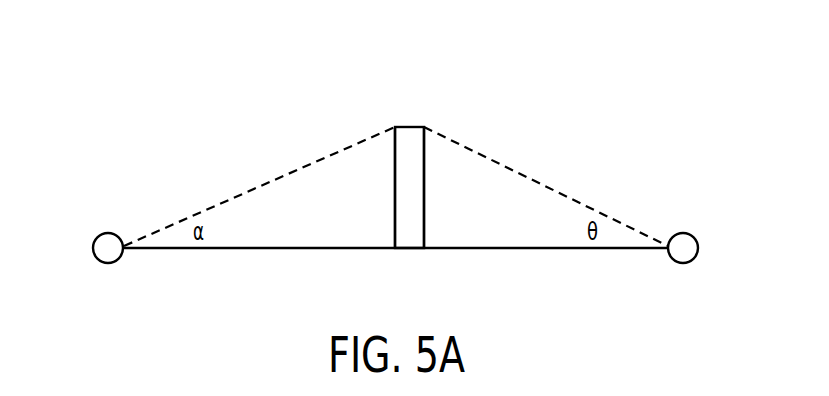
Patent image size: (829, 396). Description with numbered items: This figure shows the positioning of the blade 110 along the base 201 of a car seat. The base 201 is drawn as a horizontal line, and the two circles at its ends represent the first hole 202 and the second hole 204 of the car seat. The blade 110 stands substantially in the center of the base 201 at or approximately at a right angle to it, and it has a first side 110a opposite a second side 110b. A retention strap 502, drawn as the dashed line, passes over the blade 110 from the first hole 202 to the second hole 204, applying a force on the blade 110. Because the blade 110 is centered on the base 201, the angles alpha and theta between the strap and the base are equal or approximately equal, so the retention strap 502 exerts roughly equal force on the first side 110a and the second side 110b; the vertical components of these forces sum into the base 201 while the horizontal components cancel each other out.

The blade 110 is at (408, 229).
The first side 110a is at (395, 127).
The second side 110b is at (424, 127).
The base 201 is at (483, 249).
The first hole 202 is at (104, 234).
The second hole 204 is at (689, 234).
The retention strap 502 is at (576, 199).